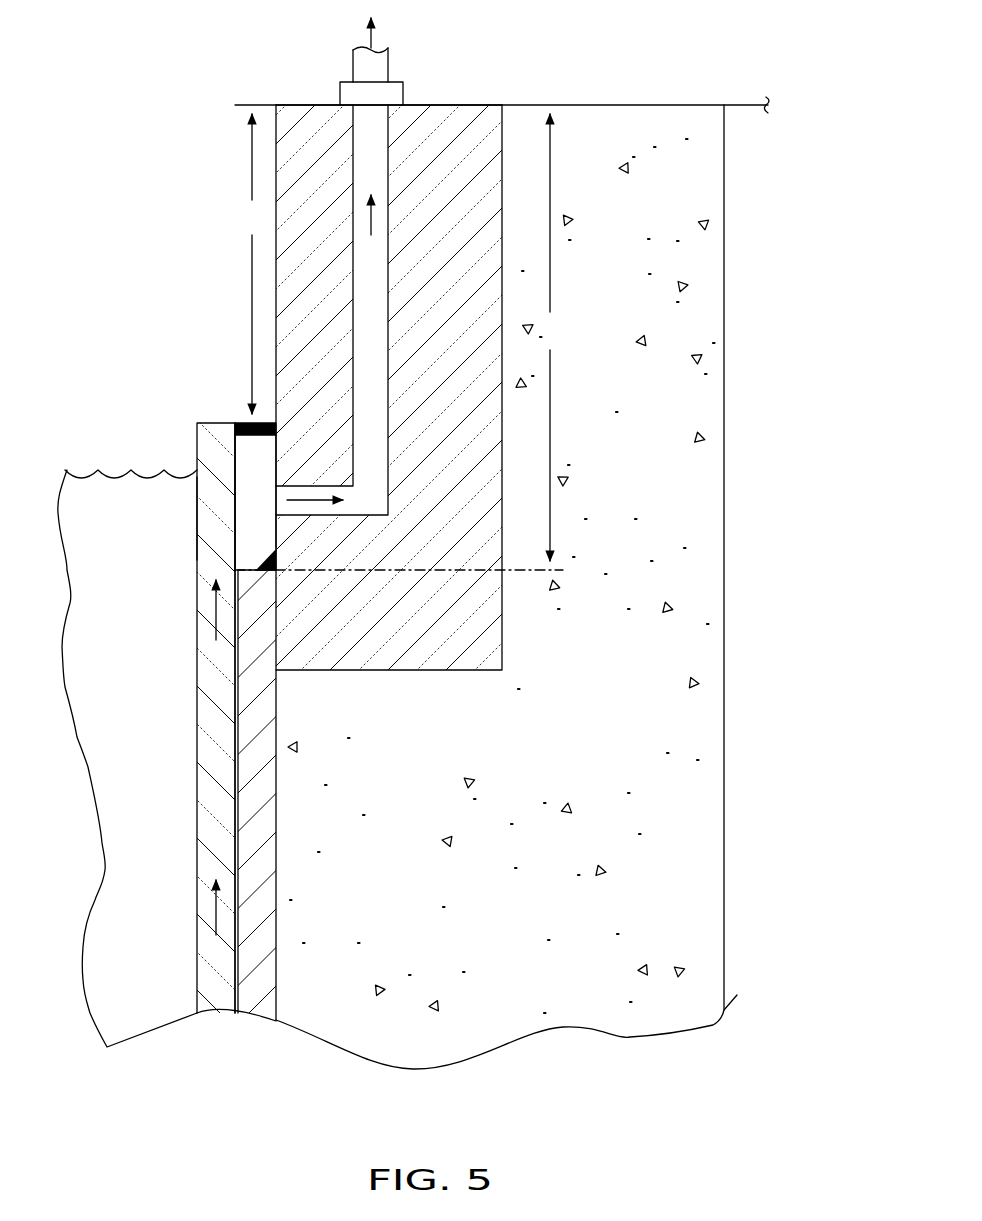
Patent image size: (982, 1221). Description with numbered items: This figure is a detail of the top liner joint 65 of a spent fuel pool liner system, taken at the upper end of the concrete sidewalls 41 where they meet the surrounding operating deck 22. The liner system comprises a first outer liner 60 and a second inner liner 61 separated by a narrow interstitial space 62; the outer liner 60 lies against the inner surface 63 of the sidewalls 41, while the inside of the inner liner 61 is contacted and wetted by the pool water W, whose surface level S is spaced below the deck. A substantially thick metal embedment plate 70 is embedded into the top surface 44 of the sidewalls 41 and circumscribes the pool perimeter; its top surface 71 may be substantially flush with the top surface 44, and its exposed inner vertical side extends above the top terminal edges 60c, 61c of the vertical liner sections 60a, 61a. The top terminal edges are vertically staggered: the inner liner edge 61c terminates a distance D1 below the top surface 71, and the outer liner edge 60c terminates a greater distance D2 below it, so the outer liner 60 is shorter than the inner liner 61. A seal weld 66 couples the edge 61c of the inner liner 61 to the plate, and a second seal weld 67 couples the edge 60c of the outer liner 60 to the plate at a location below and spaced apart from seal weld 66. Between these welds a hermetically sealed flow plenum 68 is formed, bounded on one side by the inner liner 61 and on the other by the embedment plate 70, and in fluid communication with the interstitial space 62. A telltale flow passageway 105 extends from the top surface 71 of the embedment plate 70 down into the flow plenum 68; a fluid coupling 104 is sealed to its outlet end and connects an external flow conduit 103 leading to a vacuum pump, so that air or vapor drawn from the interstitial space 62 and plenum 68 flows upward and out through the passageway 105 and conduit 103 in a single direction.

The operating deck 22 is at (750, 97).
The sidewalls 41 is at (677, 505).
The top surface of the sidewalls 44 is at (582, 97).
The first outer liner 60 is at (381, 800).
The vertical liner section of the outer liner 60a is at (257, 910).
The top terminal edge of the outer liner 60c is at (257, 570).
The second inner liner 61 is at (457, 750).
The vertical liner section of the inner liner 61a is at (222, 760).
The top terminal edge of the inner liner 61c is at (210, 423).
The interstitial space 62 is at (235, 840).
The inner surface of the fuel pool sidewalls 63 is at (264, 955).
The top liner joint 65 is at (170, 497).
The seal weld 66 is at (240, 410).
The second seal weld 67 is at (276, 553).
The flow plenum 68 is at (195, 430).
The embedment plate 70 is at (463, 152).
The top surface of the embedment plate 71 is at (320, 96).
The flow conduit 103 is at (392, 67).
The fluid coupling 104 is at (340, 82).
The flow passageway 105 is at (353, 240).
The distance D1 is at (250, 264).
The distance D2 is at (401, 342).
The surface level S is at (132, 470).
The pool water W is at (136, 683).